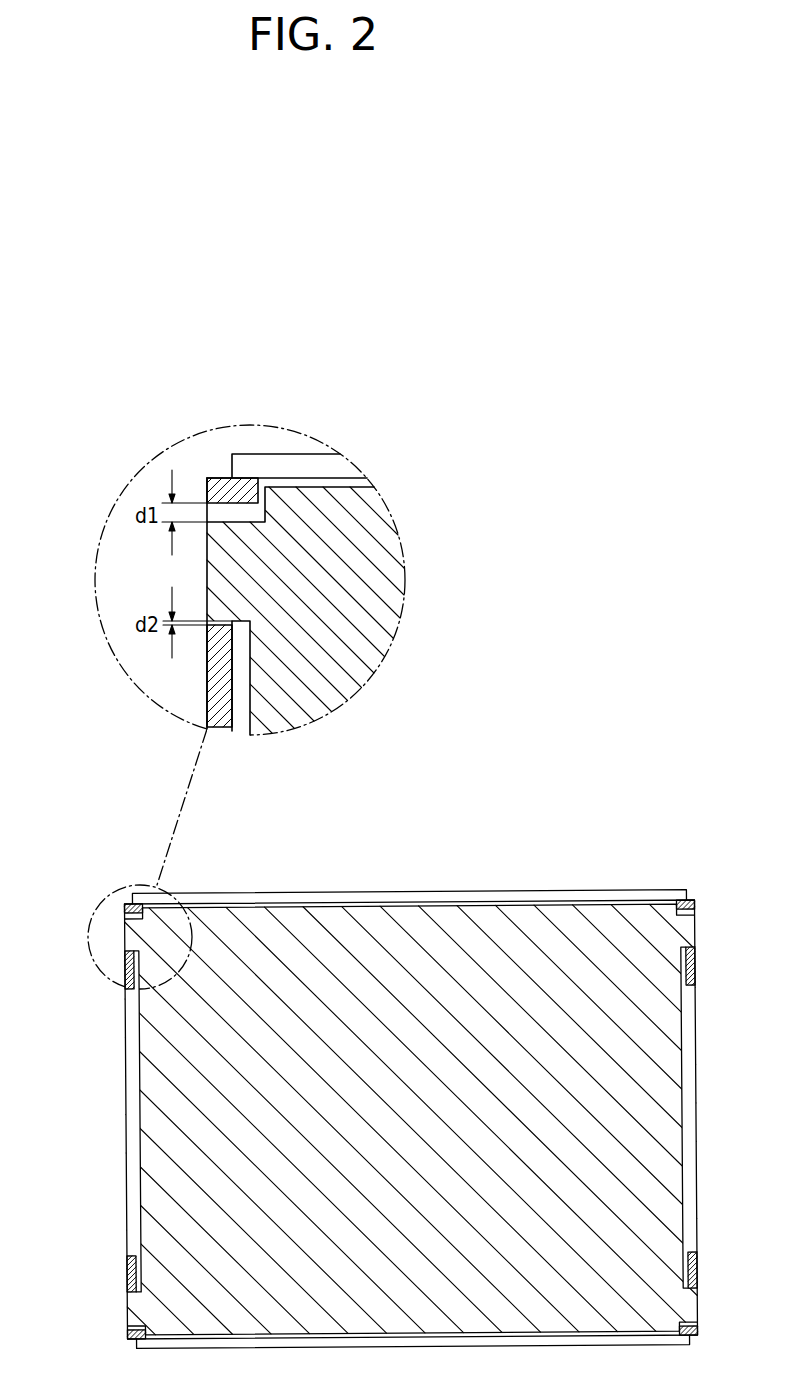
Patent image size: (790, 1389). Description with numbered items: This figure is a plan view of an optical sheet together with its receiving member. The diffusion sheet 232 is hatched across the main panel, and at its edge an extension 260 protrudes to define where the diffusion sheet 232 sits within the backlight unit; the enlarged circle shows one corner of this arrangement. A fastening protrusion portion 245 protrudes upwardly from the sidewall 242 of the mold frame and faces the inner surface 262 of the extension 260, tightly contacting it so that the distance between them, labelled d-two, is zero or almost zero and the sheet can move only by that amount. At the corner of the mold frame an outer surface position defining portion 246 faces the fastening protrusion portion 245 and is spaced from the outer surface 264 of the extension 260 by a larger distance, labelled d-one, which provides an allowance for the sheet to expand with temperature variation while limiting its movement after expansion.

The diffusion sheet 232 is at (250, 917).
The sidewall 242 is at (127, 1123).
The fastening protrusion portion 245 is at (207, 698).
The outer surface position defining portion 246 is at (232, 478).
The extension 260 is at (210, 573).
The inner surface 262 is at (207, 657).
The outer surface 264 is at (242, 522).